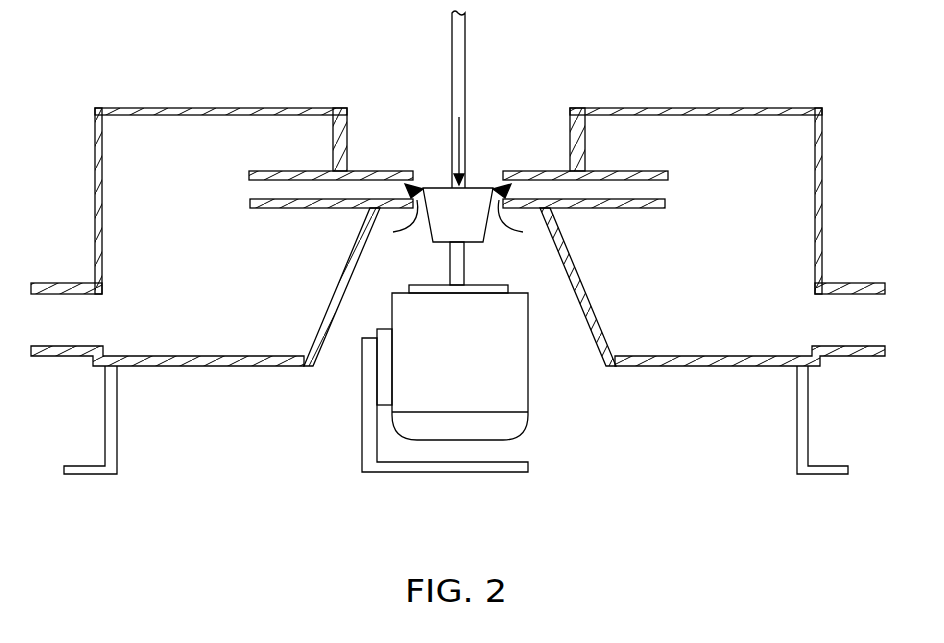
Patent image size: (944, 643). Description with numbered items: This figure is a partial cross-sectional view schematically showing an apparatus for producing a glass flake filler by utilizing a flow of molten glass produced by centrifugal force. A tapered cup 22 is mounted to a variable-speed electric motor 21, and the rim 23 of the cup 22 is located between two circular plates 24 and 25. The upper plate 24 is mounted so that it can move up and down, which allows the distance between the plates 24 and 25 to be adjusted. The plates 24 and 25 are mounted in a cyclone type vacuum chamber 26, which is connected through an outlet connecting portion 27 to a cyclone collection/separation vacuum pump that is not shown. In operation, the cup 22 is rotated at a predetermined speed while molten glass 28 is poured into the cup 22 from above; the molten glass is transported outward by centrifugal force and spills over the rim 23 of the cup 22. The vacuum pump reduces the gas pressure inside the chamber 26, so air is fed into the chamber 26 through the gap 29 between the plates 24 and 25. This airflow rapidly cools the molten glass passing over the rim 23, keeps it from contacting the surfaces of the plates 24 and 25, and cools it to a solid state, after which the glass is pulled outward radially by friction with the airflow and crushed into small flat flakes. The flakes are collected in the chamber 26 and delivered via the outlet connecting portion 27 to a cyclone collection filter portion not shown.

The variable-speed electric motor 21 is at (512, 389).
The tapered cup 22 is at (481, 190).
The rim 23 is at (430, 183).
The upper plate 24 is at (258, 175).
The lower plate 25 is at (258, 204).
The cyclone type vacuum chamber 26 is at (210, 108).
The outlet connecting portion 27 is at (56, 283).
The molten glass 28 is at (457, 78).
The gap 29 is at (235, 192).